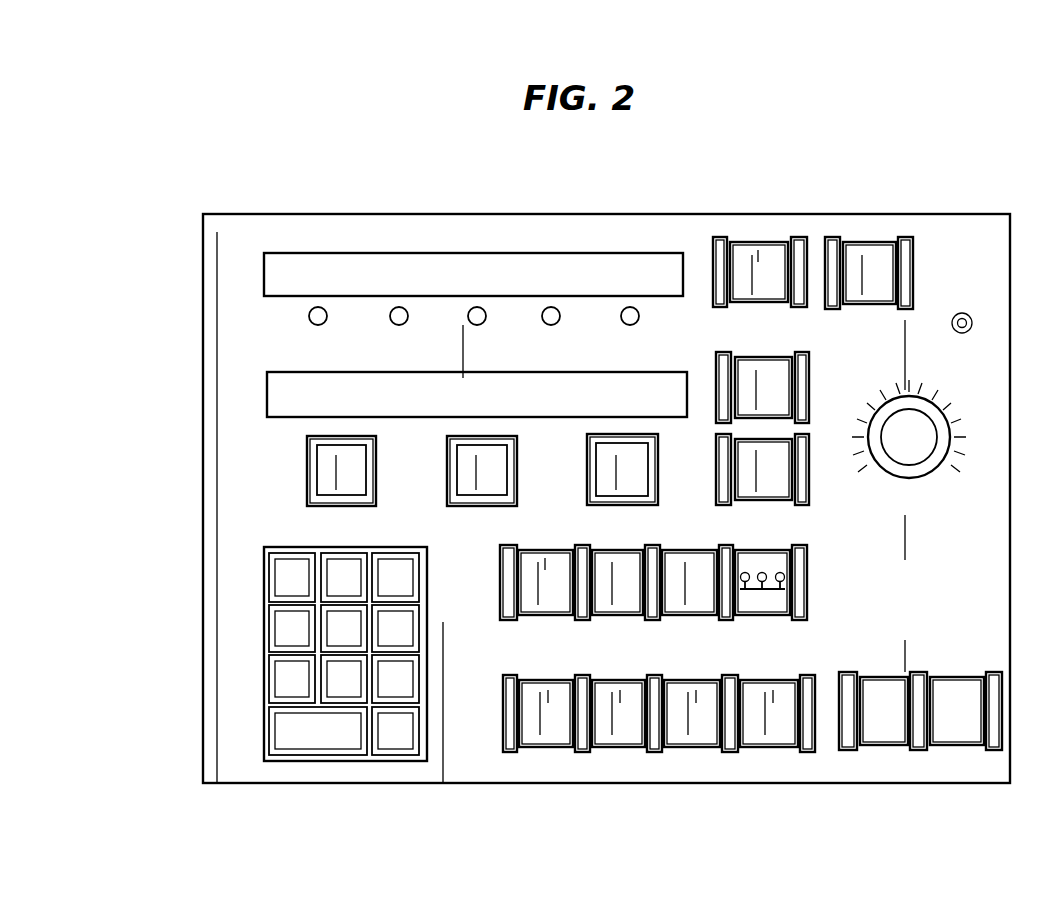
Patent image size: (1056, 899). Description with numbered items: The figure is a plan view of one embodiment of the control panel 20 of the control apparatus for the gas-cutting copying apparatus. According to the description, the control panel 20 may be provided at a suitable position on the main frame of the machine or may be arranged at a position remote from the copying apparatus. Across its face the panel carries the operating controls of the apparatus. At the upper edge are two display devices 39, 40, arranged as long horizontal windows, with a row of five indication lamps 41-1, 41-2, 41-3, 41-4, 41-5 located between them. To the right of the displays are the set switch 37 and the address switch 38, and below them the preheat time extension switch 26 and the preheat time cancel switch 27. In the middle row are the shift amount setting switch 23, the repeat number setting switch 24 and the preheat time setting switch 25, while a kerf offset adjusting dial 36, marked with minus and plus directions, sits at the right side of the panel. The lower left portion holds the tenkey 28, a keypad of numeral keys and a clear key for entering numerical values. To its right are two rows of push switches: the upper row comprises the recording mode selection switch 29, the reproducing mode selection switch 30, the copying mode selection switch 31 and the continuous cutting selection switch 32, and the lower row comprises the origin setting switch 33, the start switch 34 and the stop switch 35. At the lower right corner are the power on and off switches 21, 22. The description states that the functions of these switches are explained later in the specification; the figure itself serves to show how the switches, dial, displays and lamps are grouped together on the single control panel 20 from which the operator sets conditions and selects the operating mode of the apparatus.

The control panel 20 is at (711, 209).
The power on switch 21 is at (890, 737).
The power off switch 22 is at (965, 737).
The shift amount setting switch 23 is at (324, 456).
The repeat number setting switch 24 is at (467, 450).
The preheat time setting switch 25 is at (608, 448).
The preheat time extension switch 26 is at (782, 380).
The preheat time cancel switch 27 is at (747, 452).
The tenkey 28 is at (262, 697).
The recording mode selection switch 29 is at (530, 580).
The reproducing mode selection switch 30 is at (600, 603).
The copying mode selection switch 31 is at (675, 601).
The continuous cutting selection switch 32 is at (770, 606).
The origin setting switch 33 is at (562, 741).
The start switch 34 is at (637, 734).
The stop switch 35 is at (712, 734).
The kerf offset adjusting dial 36 is at (930, 438).
The set switch 37 is at (773, 250).
The address switch 38 is at (883, 273).
The display device 39 is at (313, 258).
The display device 40 is at (275, 394).
The indication lamp 41-1 is at (309, 316).
The indication lamp 41-2 is at (399, 307).
The indication lamp 41-3 is at (477, 307).
The indication lamp 41-4 is at (551, 307).
The indication lamp 41-5 is at (630, 307).